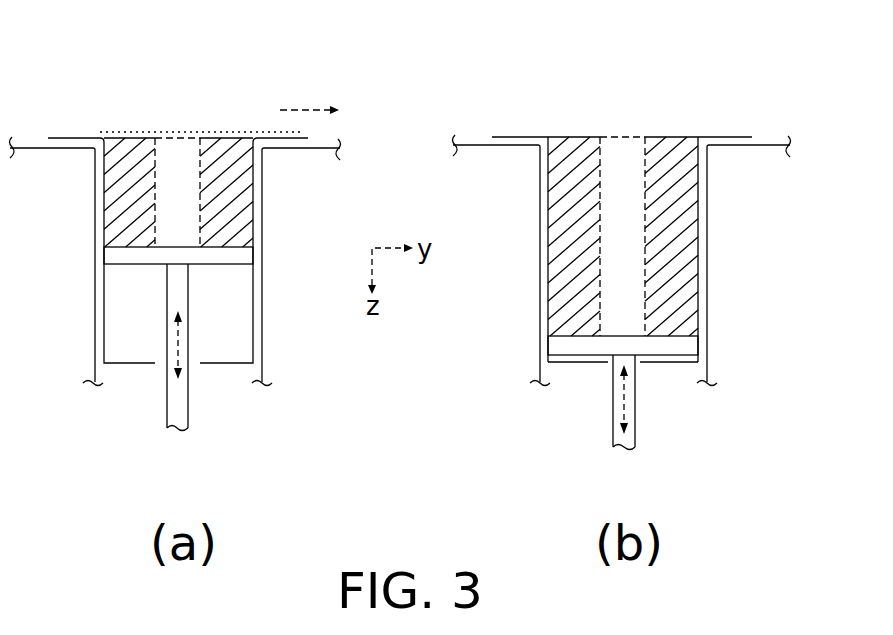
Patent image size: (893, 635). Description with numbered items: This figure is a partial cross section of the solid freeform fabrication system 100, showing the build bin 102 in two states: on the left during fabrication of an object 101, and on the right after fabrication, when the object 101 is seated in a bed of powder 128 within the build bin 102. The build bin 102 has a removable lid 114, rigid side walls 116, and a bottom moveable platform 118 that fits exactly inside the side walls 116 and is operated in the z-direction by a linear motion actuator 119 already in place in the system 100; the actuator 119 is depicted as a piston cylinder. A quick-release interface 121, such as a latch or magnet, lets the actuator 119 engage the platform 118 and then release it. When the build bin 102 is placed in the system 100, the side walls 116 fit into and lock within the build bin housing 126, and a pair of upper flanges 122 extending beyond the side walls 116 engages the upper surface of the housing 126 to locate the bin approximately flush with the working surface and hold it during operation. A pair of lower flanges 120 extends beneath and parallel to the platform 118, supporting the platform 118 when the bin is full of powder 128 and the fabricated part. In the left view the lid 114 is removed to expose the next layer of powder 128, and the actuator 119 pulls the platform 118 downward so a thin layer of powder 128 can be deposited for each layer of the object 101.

The solid freeform fabrication system 100 is at (352, 374).
The object 101 is at (177, 137).
The build bin 102 is at (148, 115).
The removable lid 114 is at (575, 137).
The side walls 116 is at (104, 210).
The bottom moveable platform 118 is at (230, 258).
The linear motion actuator 119 is at (636, 427).
The lower flanges 120 is at (125, 365).
The quick-release interface 121 is at (608, 357).
The upper flanges 122 is at (73, 138).
The build bin housing 126 is at (95, 312).
The powder 128 is at (265, 132).